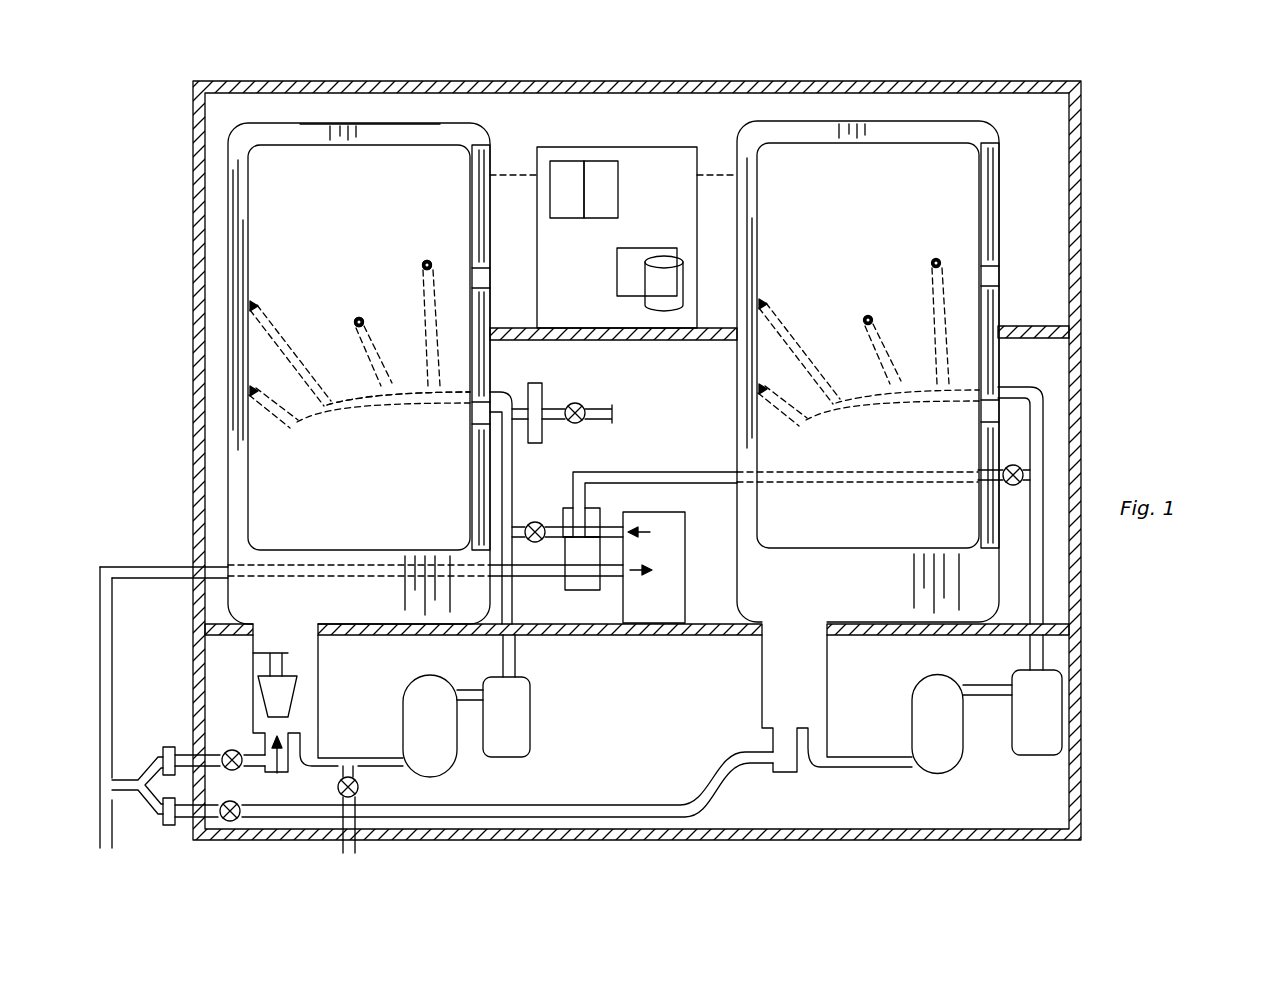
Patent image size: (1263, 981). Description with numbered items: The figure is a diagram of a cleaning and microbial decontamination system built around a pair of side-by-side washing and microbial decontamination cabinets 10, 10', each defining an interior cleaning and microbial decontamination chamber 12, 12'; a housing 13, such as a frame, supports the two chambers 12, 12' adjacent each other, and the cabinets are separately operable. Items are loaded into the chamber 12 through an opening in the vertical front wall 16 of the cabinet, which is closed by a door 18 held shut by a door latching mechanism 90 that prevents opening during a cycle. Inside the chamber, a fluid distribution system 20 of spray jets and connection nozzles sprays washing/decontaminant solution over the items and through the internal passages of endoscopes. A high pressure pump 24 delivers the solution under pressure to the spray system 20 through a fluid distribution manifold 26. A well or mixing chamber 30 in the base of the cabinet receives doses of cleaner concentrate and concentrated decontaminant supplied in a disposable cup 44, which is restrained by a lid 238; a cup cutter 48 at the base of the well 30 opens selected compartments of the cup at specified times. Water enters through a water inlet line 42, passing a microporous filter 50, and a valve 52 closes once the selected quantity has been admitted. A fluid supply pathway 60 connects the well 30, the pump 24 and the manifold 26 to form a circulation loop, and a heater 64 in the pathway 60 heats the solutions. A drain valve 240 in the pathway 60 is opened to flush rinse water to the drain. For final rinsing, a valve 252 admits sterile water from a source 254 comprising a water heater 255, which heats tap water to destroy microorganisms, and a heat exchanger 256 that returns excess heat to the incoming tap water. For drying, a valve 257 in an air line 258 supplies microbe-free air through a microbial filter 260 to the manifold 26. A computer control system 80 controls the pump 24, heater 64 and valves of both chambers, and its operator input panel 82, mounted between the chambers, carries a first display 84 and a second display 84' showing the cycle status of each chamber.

The washing and microbial decontamination cabinet 10 is at (311, 337).
The second cabinet 10' is at (854, 332).
The interior cleaning and microbial decontamination chamber 12 is at (301, 347).
The second chamber 12' is at (874, 297).
The housing 13 is at (193, 190).
The vertical front wall 16 is at (242, 477).
The door 18 is at (412, 166).
The fluid distribution system 20 is at (427, 265).
The high pressure pump 24 is at (430, 738).
The fluid distribution manifold 26 is at (410, 400).
The well or mixing chamber 30 is at (328, 735).
The water inlet line 42 is at (113, 782).
The disposable package or cup 44 is at (298, 700).
The cup cutter 48 is at (280, 777).
The microporous filter 50 is at (170, 826).
The valve 52 is at (233, 750).
The fluid supply pathway 60 is at (376, 772).
The heater 64 is at (530, 695).
The computer control system 80 is at (613, 221).
The operator input panel 82 is at (589, 196).
The first display 84 is at (568, 219).
The second display 84' is at (629, 199).
The door latching mechanism 90 is at (472, 212).
The restraining member or lid 238 is at (296, 640).
The drain valve 240 is at (356, 812).
The valve 252 is at (532, 524).
The source of sterile rinse water 254 is at (680, 522).
The water heater 255 is at (660, 592).
The heat exchanger 256 is at (575, 592).
The valve 257 is at (577, 423).
The air line 258 is at (606, 405).
The microbial filter 260 is at (538, 385).